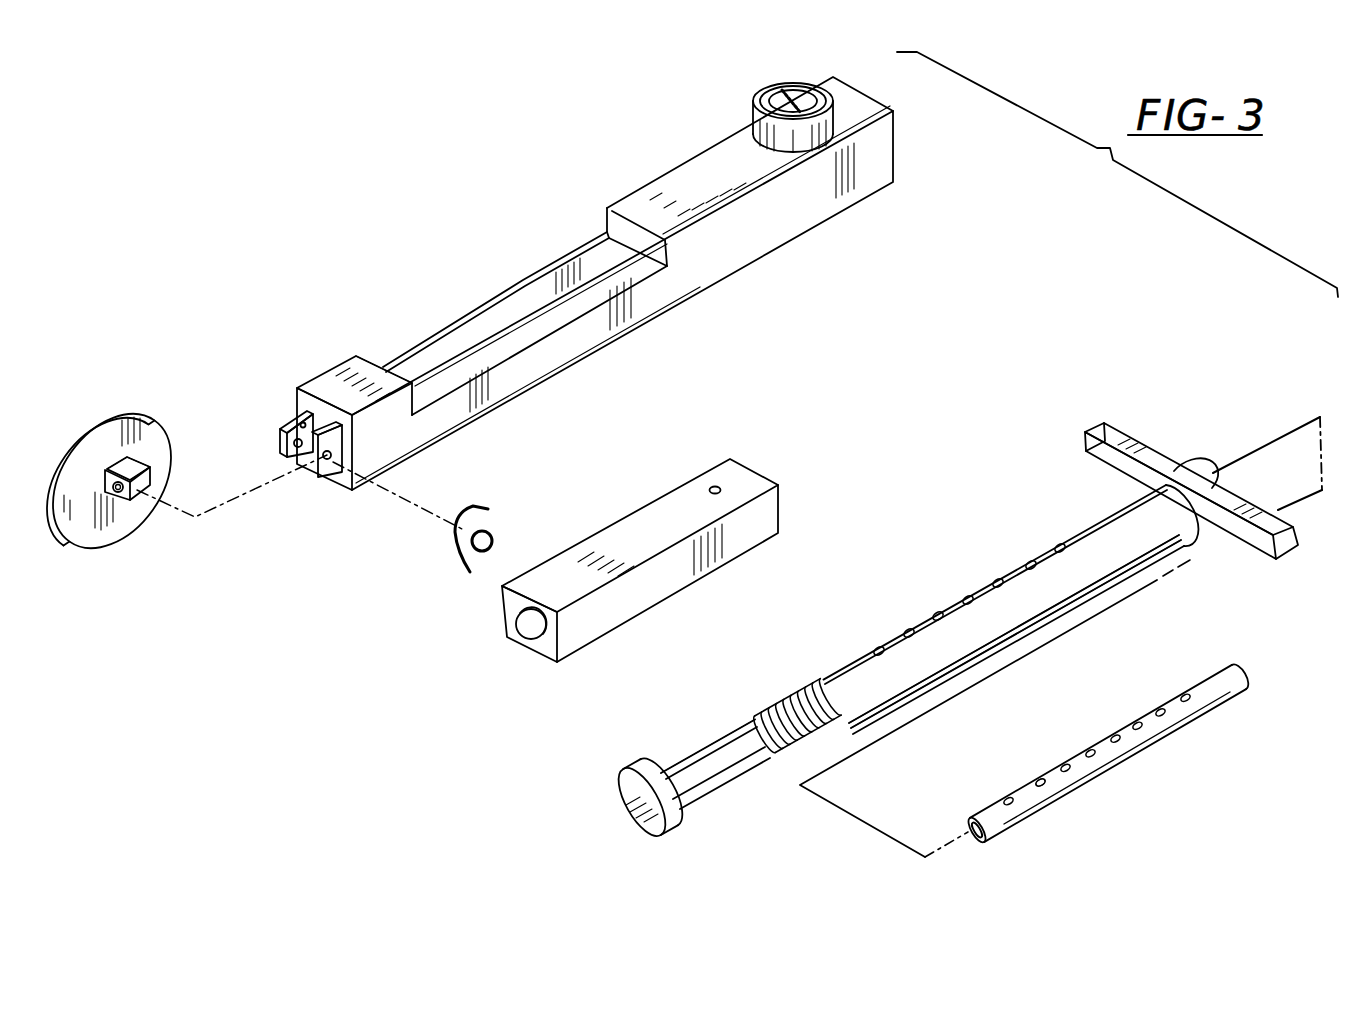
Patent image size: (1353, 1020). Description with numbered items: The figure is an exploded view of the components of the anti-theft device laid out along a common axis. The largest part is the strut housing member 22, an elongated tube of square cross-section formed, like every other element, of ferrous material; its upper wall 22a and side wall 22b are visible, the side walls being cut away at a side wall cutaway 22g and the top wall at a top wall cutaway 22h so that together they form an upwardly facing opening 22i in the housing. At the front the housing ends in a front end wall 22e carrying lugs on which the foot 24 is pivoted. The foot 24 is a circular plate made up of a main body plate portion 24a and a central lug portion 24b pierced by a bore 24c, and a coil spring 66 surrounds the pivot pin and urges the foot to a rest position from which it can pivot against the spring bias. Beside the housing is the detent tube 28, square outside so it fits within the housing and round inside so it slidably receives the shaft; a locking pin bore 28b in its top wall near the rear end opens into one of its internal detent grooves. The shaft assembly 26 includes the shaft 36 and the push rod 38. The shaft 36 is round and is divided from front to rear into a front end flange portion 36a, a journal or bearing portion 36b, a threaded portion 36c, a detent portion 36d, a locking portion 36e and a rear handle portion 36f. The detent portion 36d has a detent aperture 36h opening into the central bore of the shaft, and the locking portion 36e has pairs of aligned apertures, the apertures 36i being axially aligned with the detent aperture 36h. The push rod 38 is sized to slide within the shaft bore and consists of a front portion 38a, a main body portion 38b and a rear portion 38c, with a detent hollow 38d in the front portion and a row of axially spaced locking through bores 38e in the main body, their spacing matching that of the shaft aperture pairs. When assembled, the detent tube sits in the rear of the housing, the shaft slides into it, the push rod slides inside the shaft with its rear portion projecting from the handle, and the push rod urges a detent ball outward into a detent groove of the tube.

The strut housing member 22 is at (593, 216).
The upper wall 22a is at (723, 147).
The side wall 22b is at (785, 217).
The front end wall 22e is at (333, 478).
The side wall cutaway 22g is at (530, 276).
The top wall cutaway 22h is at (641, 222).
The upwardly facing opening 22i is at (478, 306).
The foot 24 is at (103, 408).
The main body plate portion 24a is at (165, 427).
The central lug portion 24b is at (140, 460).
The bore 24c is at (112, 542).
The shaft assembly 26 is at (895, 612).
The detent tube 28 is at (627, 515).
The locking pin bore 28b is at (710, 487).
The shaft 36 is at (843, 659).
The front end flange portion 36a is at (624, 795).
The journal or bearing portion 36b is at (705, 745).
The threaded portion 36c is at (773, 707).
The detent portion 36d is at (903, 610).
The locking portion 36e is at (1003, 565).
The rear handle portion 36f is at (1162, 443).
The detent aperture 36h is at (879, 648).
The apertures 36i is at (937, 644).
The push rod 38 is at (1085, 742).
The front portion 38a is at (973, 813).
The main body portion 38b is at (1033, 772).
The rear portion 38c is at (1228, 663).
The detent hollow 38d is at (1007, 797).
The locking through bores 38e is at (1043, 785).
The coil spring 66 is at (460, 568).